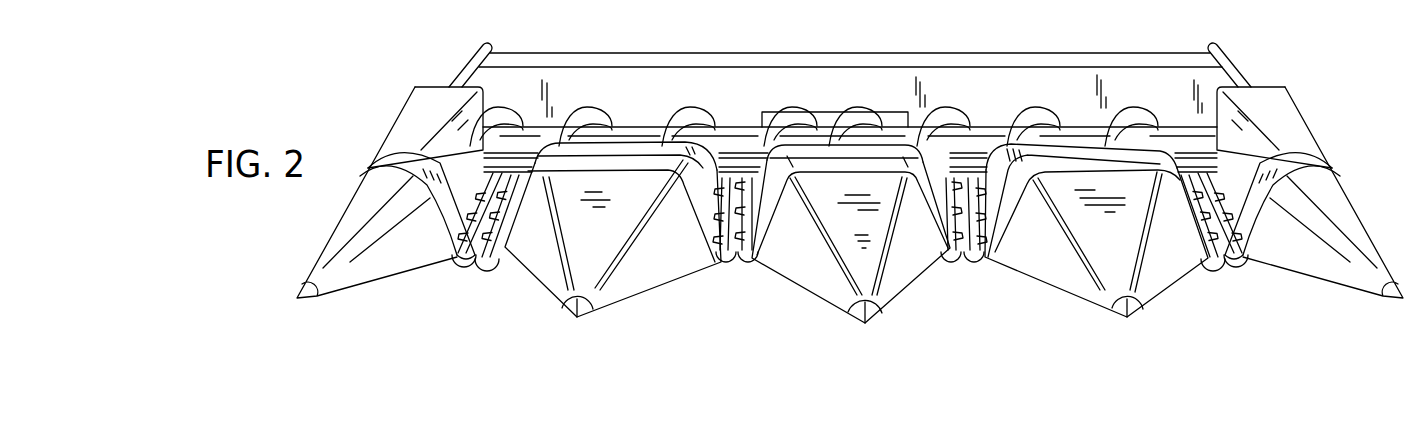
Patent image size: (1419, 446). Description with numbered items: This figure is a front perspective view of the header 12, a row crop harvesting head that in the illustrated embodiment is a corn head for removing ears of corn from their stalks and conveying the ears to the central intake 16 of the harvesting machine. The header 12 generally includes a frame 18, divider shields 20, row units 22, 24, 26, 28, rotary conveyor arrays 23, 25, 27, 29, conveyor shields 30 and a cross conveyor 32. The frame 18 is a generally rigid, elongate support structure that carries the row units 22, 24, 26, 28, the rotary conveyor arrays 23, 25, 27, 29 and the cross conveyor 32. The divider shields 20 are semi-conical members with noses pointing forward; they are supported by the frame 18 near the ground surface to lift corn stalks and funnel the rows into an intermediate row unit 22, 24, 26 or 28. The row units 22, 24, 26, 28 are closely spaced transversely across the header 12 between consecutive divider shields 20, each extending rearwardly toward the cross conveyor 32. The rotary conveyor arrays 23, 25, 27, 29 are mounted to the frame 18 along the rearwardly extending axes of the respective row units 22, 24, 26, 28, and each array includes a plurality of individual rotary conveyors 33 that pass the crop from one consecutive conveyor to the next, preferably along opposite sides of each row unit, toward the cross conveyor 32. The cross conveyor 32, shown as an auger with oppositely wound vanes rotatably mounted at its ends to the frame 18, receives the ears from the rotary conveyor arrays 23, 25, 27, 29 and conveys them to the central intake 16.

The header 12 is at (680, 38).
The central intake 16 is at (832, 113).
The frame 18 is at (1040, 53).
The divider shields 20 is at (347, 225).
The row unit 22 is at (501, 272).
The rotary conveyor array 23 is at (476, 258).
The row unit 24 is at (751, 272).
The rotary conveyor array 25 is at (732, 262).
The row unit 26 is at (979, 266).
The rotary conveyor array 27 is at (961, 264).
The row unit 28 is at (1242, 268).
The rotary conveyor array 29 is at (1221, 264).
The conveyor shields 30 is at (410, 112).
The cross conveyor 32 is at (1130, 115).
The rotary conveyors 33 is at (495, 182).